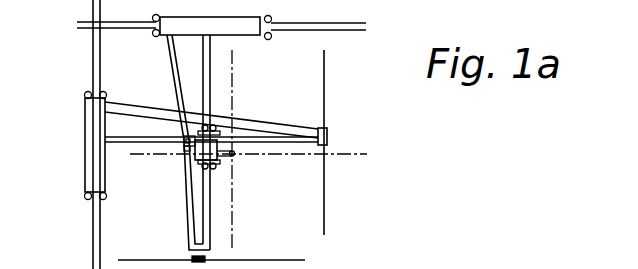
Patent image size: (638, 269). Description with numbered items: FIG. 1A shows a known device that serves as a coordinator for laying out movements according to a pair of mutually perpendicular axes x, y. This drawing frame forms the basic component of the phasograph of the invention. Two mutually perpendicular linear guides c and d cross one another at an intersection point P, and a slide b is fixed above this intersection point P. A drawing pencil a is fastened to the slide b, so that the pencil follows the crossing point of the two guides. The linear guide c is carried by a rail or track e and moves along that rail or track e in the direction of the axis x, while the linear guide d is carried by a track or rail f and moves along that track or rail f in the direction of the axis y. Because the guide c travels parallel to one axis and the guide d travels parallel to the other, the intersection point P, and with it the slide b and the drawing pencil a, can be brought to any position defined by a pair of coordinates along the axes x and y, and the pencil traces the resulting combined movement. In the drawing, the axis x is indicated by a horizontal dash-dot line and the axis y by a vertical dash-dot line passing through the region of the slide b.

The drawing pencil a is at (233, 157).
The slide b is at (222, 170).
The linear guide c is at (210, 80).
The linear guide d is at (119, 143).
The rail or track e is at (307, 26).
The track or rail f is at (100, 237).
The intersection point P is at (222, 135).
The axis x is at (255, 153).
The axis y is at (238, 151).